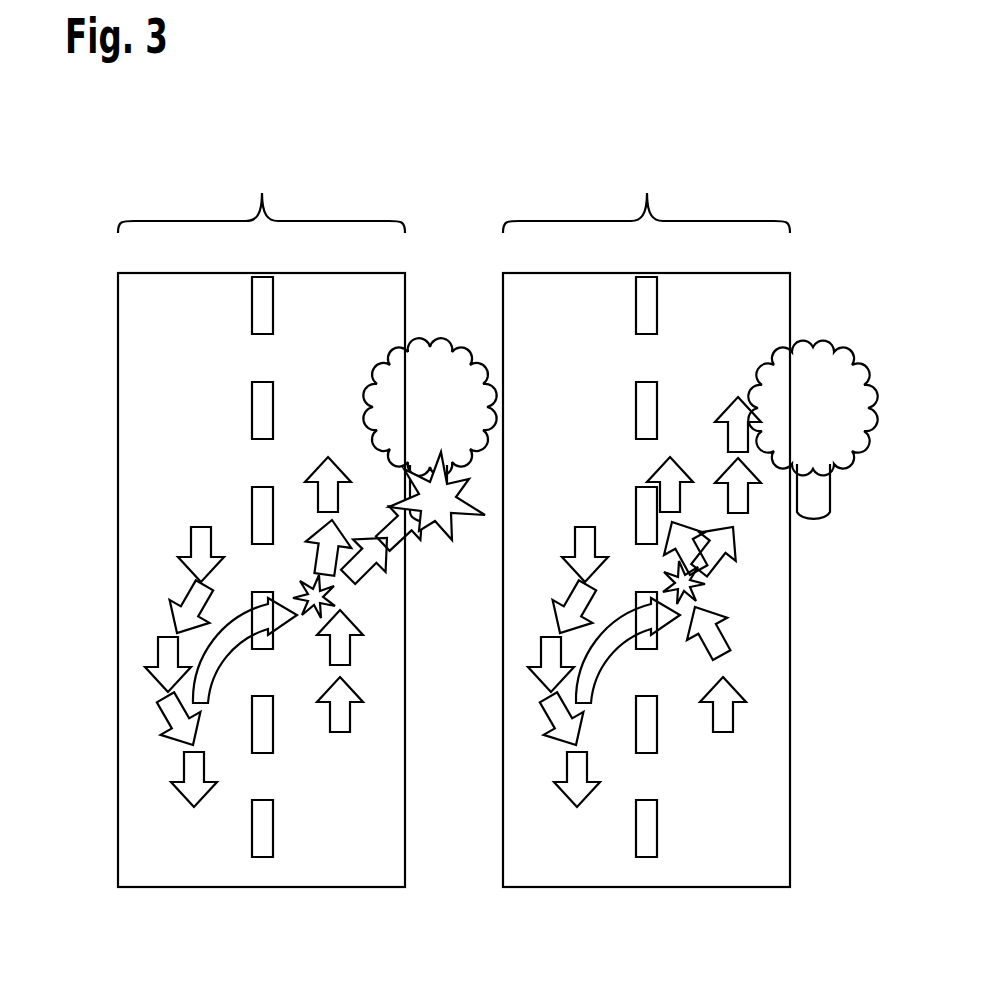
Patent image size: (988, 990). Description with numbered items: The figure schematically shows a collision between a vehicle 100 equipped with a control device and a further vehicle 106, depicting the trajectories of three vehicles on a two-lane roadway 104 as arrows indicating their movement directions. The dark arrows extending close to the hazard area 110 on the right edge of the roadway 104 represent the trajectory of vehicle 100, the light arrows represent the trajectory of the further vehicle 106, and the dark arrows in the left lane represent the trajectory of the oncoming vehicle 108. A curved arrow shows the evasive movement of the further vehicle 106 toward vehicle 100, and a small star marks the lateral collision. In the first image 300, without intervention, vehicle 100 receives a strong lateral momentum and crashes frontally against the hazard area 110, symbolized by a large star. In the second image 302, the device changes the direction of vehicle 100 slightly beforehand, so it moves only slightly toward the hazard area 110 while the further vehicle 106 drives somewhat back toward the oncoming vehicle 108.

The vehicle 100 is at (378, 580).
The roadway 104 is at (118, 338).
The further vehicle 106 is at (307, 476).
The oncoming vehicle 108 is at (204, 546).
The hazard area 110 is at (437, 334).
The first image 300 is at (261, 193).
The second image 302 is at (646, 193).